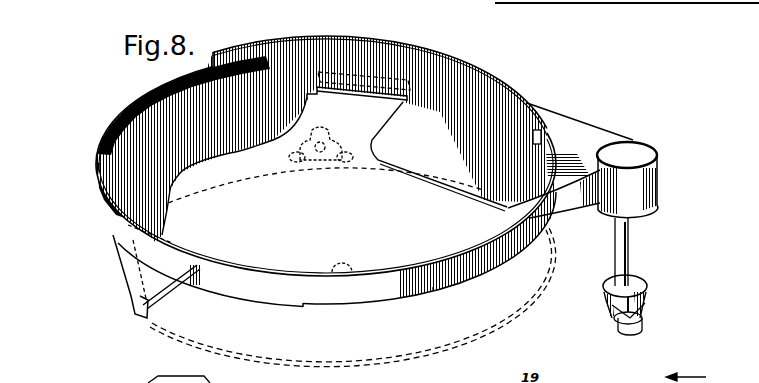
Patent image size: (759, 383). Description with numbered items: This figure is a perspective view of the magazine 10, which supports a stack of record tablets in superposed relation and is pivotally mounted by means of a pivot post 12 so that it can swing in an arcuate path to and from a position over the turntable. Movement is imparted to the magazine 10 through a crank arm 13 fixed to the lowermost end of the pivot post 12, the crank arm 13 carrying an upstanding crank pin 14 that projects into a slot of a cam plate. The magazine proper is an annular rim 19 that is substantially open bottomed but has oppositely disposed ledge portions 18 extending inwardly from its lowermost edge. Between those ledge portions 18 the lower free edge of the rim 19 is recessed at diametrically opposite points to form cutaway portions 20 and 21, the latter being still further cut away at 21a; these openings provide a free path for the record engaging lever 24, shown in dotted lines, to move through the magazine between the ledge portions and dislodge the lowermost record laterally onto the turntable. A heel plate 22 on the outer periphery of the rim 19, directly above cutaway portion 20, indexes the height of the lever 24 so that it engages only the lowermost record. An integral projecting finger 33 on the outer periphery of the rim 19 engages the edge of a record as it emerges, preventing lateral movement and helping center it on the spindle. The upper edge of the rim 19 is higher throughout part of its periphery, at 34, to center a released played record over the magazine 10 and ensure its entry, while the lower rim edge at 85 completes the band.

The magazine 10 is at (578, 127).
The pivot post 12 is at (632, 248).
The crank arm 13 is at (613, 307).
The crank pin 14 is at (647, 288).
The ledge portions 18 is at (228, 152).
The annular rim 19 is at (131, 104).
The cutaway portion 20 is at (352, 92).
The cutaway portion 21 is at (100, 189).
The further cutaway portion 21a is at (357, 304).
The heel plate 22 is at (395, 84).
The record engaging lever 24 is at (322, 137).
The projecting finger 33 is at (143, 306).
The higher wall portion 34 is at (352, 38).
The rivet 85 is at (267, 268).